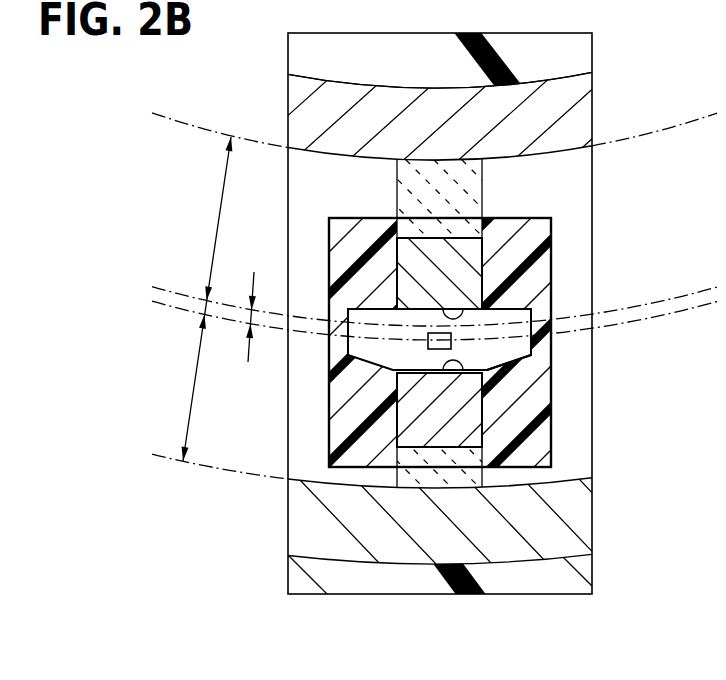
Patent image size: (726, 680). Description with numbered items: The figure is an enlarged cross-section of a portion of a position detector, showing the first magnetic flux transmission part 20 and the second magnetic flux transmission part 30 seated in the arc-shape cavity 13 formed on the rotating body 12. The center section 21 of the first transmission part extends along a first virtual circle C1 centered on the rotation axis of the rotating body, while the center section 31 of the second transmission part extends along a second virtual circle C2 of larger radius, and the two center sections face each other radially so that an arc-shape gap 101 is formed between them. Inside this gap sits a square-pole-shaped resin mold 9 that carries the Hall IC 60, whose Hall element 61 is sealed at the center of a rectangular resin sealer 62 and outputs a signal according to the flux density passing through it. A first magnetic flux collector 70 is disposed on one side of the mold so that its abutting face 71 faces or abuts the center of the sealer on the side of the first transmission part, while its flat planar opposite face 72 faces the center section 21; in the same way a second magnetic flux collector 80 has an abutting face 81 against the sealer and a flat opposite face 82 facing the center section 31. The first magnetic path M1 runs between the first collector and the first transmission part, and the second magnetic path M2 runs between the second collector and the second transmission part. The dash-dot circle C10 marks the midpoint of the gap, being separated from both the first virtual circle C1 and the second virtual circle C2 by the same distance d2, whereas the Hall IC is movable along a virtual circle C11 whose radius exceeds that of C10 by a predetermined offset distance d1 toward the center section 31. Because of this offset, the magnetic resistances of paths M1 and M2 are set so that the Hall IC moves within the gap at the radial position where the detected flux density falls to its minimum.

The arc-shape gap 101 is at (320, 188).
The rotating body 12 is at (522, 50).
The arc-shape cavity 13 is at (543, 89).
The first magnetic flux transmission part 20 is at (333, 88).
The center section 21 is at (368, 95).
The second magnetic flux transmission part 30 is at (333, 527).
The center section 31 is at (370, 528).
The mold 9 is at (413, 340).
The opposite face 72 is at (437, 227).
The first magnetic path M1 is at (483, 182).
The first magnetic flux collector 70 is at (408, 260).
The abutting face 71 is at (483, 297).
The Hall IC 60 is at (357, 352).
The Hall element 61 is at (438, 346).
The sealer 62 is at (520, 315).
The second magnetic flux collector 80 is at (407, 417).
The abutting face 81 is at (453, 373).
The opposite face 82 is at (437, 445).
The second magnetic path M2 is at (478, 472).
The first virtual circle C1 is at (170, 119).
The virtual circle C10 is at (160, 288).
The virtual circle C11 is at (156, 303).
The second virtual circle C2 is at (171, 459).
The offset distance d1 is at (250, 314).
The distance d2 is at (199, 299).